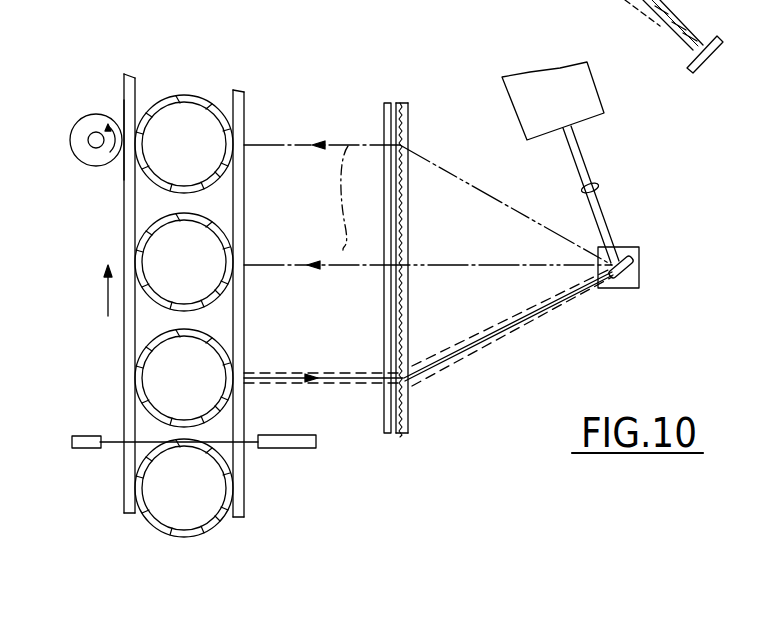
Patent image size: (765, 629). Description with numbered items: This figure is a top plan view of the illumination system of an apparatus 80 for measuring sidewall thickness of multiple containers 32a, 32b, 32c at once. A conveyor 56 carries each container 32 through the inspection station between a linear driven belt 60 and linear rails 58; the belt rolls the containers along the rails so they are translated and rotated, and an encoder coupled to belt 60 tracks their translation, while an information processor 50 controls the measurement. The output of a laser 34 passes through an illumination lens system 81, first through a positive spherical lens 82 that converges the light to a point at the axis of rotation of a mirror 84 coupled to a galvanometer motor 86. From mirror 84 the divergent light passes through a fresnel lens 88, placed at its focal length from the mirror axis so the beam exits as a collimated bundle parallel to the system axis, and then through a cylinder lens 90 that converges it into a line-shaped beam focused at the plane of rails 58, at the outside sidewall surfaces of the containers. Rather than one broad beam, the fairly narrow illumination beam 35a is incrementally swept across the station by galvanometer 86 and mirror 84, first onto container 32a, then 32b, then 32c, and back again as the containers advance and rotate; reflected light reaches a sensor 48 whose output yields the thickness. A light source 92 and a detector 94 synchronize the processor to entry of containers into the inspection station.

The container 32 is at (234, 487).
The container 32a is at (232, 358).
The container 32b is at (232, 249).
The container 32c is at (231, 133).
The laser 34 is at (598, 97).
The illumination beam 35a is at (345, 372).
The sensor 48 is at (720, 36).
The information processor 50 is at (98, 120).
The conveyor 56 is at (226, 47).
The linear rail 58 is at (245, 313).
The linear driven belt 60 is at (127, 327).
The apparatus 80 is at (82, 96).
The illumination lens system 81 is at (420, 233).
The positive spherical lens 82 is at (597, 183).
The mirror 84 is at (640, 250).
The galvanometer motor 86 is at (640, 277).
The fresnel lens 88 is at (409, 109).
The cylinder lens 90 is at (387, 103).
The light source 92 is at (90, 435).
The detector 94 is at (303, 440).